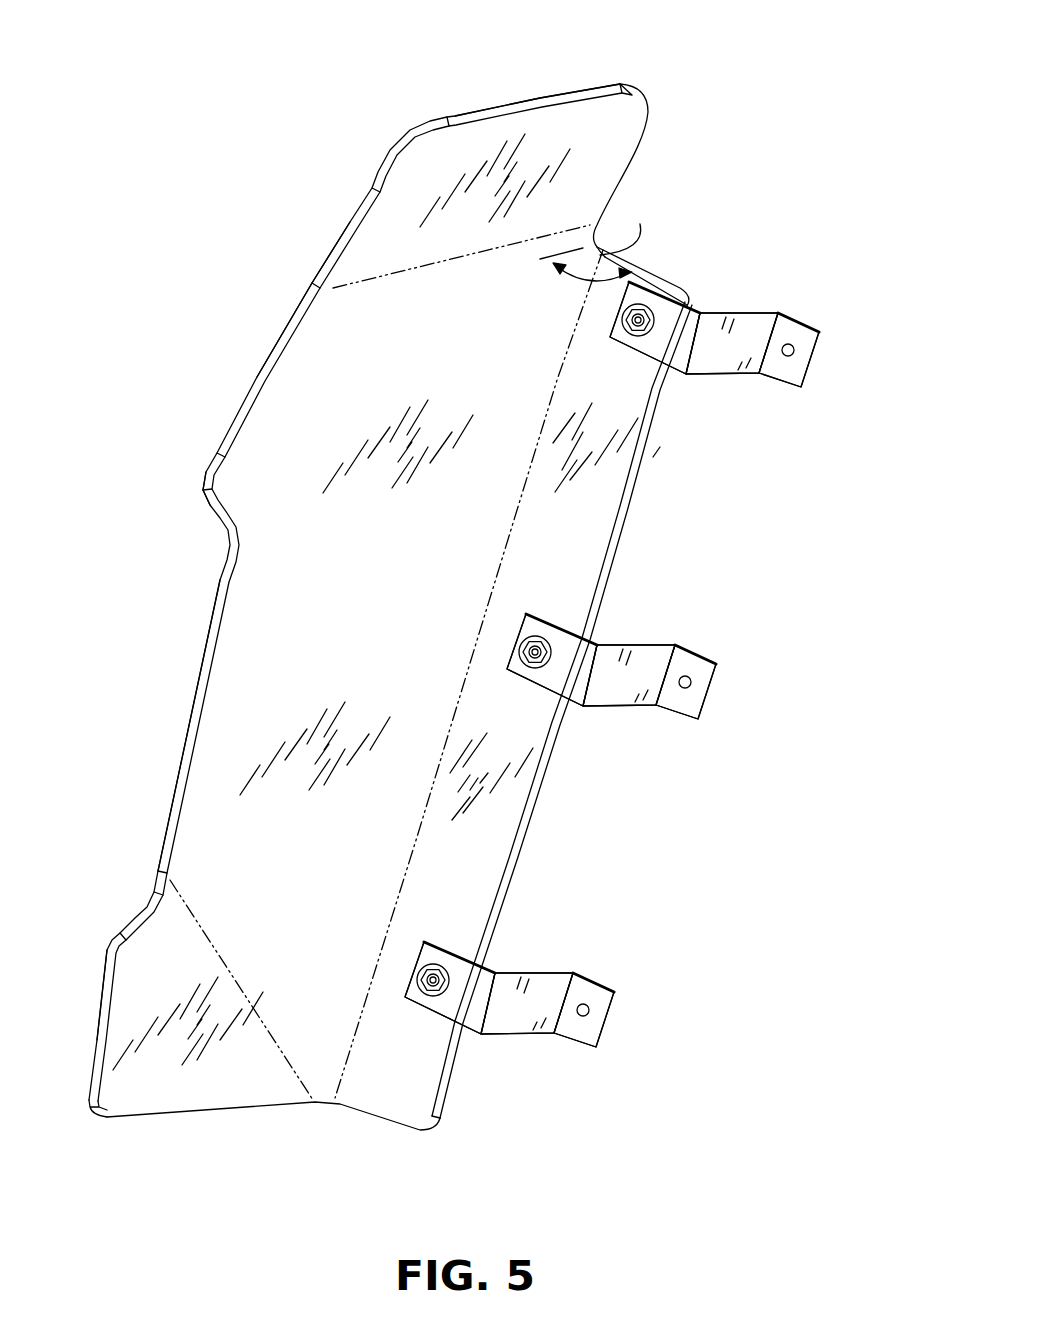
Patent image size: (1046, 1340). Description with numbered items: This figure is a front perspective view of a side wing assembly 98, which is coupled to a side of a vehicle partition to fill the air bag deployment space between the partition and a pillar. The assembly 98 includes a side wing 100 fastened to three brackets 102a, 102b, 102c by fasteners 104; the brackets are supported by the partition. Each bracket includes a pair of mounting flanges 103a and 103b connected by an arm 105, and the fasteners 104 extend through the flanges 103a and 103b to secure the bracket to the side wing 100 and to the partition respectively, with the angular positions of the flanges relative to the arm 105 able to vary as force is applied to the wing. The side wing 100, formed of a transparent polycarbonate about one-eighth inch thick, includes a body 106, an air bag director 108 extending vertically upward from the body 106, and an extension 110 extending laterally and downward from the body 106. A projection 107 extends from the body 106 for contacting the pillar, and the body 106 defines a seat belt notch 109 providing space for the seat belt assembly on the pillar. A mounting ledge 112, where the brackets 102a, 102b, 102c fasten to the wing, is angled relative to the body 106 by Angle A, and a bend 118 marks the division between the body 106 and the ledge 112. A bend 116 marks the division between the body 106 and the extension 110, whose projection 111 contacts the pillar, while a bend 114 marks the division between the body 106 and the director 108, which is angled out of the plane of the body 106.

The side wing assembly 98 is at (463, 596).
The side wing 100 is at (369, 596).
The bracket 102a is at (812, 358).
The bracket 102b is at (717, 688).
The bracket 102c is at (612, 1010).
The mounting flange 103a is at (657, 352).
The mounting flange 103b is at (778, 380).
The fastener 104 is at (612, 331).
The arm 105 is at (747, 330).
The body 106 is at (318, 335).
The projection 107 is at (226, 500).
The air bag director 108 is at (533, 107).
The seat belt notch 109 is at (197, 702).
The extension 110 is at (137, 1080).
The projection 111 is at (110, 950).
The mounting ledge 112 is at (390, 1095).
The bend 114 is at (428, 268).
The bend 116 is at (245, 932).
The bend 118 is at (468, 612).